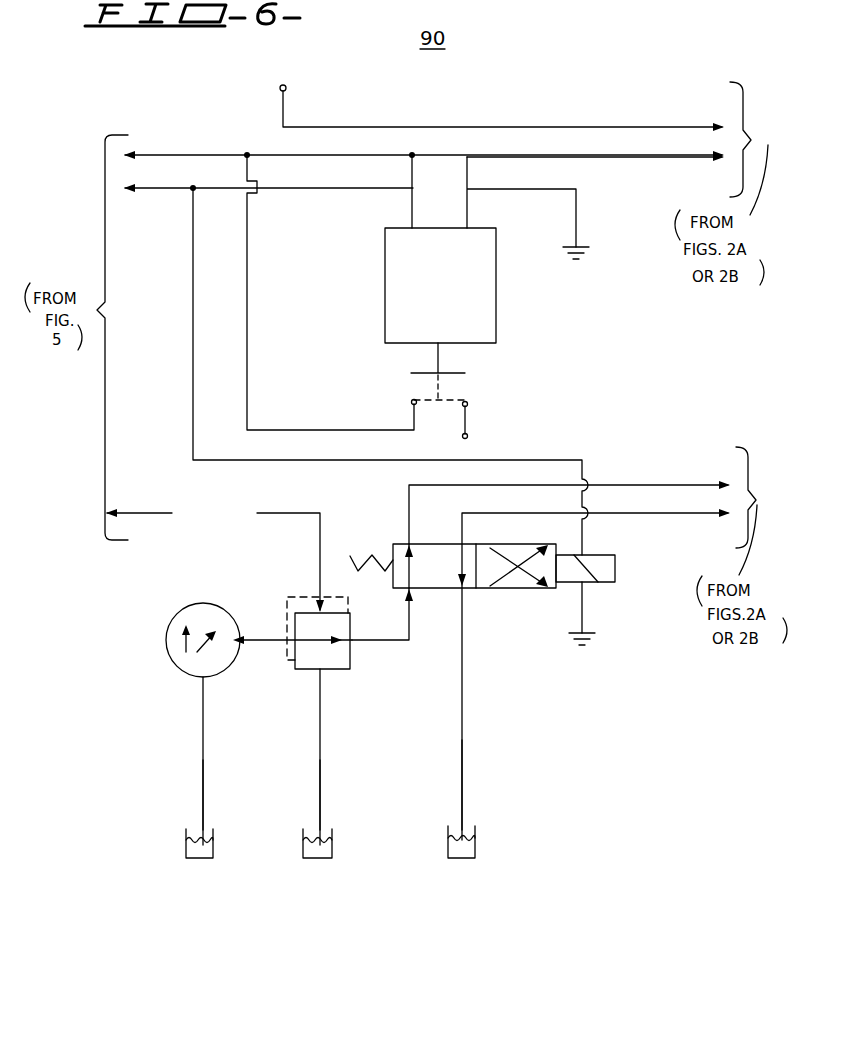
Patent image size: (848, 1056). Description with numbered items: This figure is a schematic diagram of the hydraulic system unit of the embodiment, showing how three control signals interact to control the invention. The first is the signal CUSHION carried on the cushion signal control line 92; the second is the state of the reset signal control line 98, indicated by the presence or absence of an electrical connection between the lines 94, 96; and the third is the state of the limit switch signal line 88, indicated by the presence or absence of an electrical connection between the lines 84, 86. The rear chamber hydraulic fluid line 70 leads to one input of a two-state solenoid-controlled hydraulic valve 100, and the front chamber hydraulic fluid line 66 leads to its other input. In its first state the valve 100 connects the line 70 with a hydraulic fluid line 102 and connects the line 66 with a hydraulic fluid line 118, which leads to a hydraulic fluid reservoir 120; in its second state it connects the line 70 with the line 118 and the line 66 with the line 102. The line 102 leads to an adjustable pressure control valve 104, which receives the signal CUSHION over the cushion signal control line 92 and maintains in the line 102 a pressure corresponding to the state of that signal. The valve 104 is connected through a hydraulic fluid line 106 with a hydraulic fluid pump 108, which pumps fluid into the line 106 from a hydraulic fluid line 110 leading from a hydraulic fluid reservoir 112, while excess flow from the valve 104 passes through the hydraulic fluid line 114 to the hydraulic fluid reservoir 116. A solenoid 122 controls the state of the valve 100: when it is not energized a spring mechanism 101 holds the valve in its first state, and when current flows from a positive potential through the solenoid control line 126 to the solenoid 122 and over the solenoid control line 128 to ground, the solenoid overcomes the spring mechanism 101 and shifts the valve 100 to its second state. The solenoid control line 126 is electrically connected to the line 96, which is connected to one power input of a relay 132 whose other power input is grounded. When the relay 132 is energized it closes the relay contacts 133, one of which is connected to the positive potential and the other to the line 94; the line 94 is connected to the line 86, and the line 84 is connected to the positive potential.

The reset signal control line 98 is at (142, 130).
The line 94 is at (152, 155).
The line 96 is at (145, 188).
The limit switch signal line 88 is at (622, 102).
The line 84 is at (638, 127).
The line 86 is at (638, 157).
The relay 132 is at (496, 312).
The relay contacts 133 is at (412, 402).
The solenoid control line 126 is at (557, 462).
The rear chamber hydraulic fluid line 70 is at (648, 485).
The front chamber hydraulic fluid line 66 is at (670, 513).
The solenoid 122 is at (603, 582).
The solenoid control line 128 is at (586, 618).
The two-state solenoid-controlled hydraulic valve 100 is at (483, 588).
The spring mechanism 101 is at (352, 562).
The hydraulic fluid line 102 is at (390, 640).
The cushion signal control line 92 is at (133, 513).
The adjustable pressure control valve 104 is at (345, 669).
The hydraulic fluid line 106 is at (262, 636).
The hydraulic fluid pump 108 is at (220, 672).
The hydraulic fluid line 110 is at (203, 783).
The hydraulic fluid reservoir 112 is at (213, 843).
The hydraulic fluid line 114 is at (320, 782).
The hydraulic fluid reservoir 116 is at (332, 845).
The hydraulic fluid line 118 is at (462, 773).
The hydraulic fluid reservoir 120 is at (475, 845).